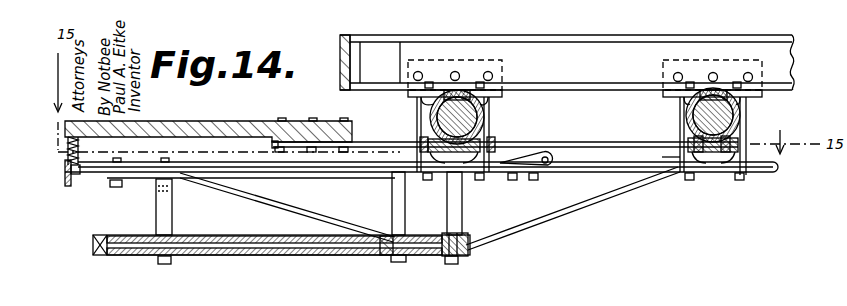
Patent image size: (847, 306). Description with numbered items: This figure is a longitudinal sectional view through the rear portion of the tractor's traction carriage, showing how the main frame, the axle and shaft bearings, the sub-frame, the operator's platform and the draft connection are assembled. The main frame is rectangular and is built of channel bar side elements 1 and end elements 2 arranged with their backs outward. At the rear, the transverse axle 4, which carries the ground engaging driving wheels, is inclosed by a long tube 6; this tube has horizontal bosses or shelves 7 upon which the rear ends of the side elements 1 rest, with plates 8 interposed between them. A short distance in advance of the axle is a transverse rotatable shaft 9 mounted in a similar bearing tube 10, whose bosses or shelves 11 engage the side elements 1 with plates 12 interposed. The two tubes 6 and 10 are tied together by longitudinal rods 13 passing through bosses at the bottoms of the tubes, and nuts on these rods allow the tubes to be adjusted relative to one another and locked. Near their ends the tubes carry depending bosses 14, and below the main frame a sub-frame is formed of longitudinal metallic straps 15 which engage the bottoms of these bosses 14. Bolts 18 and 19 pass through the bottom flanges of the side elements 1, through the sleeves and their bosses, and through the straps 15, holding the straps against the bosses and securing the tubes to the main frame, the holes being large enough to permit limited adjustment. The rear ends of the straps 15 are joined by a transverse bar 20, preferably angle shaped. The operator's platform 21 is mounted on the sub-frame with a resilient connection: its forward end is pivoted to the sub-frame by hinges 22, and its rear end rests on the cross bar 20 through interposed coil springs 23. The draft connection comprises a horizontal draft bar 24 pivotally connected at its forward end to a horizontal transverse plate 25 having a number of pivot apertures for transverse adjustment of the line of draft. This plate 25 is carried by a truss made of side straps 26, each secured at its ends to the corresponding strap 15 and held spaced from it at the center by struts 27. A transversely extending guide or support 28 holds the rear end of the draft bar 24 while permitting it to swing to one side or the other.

The side element 1 is at (558, 34).
The end element 2 is at (340, 63).
The transverse axle 4 is at (484, 123).
The tube 6 is at (431, 118).
The boss 7 is at (490, 100).
The plate 8 is at (498, 95).
The transverse rotatable shaft 9 is at (727, 144).
The bearing tube 10 is at (691, 118).
The boss 11 is at (741, 109).
The plate 12 is at (752, 95).
The longitudinal rod 13 is at (597, 140).
The depending boss 14 is at (668, 158).
The longitudinal strap 15 is at (606, 168).
The bolt 18 is at (480, 81).
The bolt 19 is at (738, 81).
The transverse bar 20 is at (77, 177).
The platform 21 is at (192, 110).
The hinge 22 is at (546, 166).
The coil spring 23 is at (80, 142).
The draft bar 24 is at (278, 256).
The transverse plate 25 is at (463, 252).
The side strap 26 is at (293, 211).
The strut 27 is at (392, 212).
The guide 28 is at (172, 258).